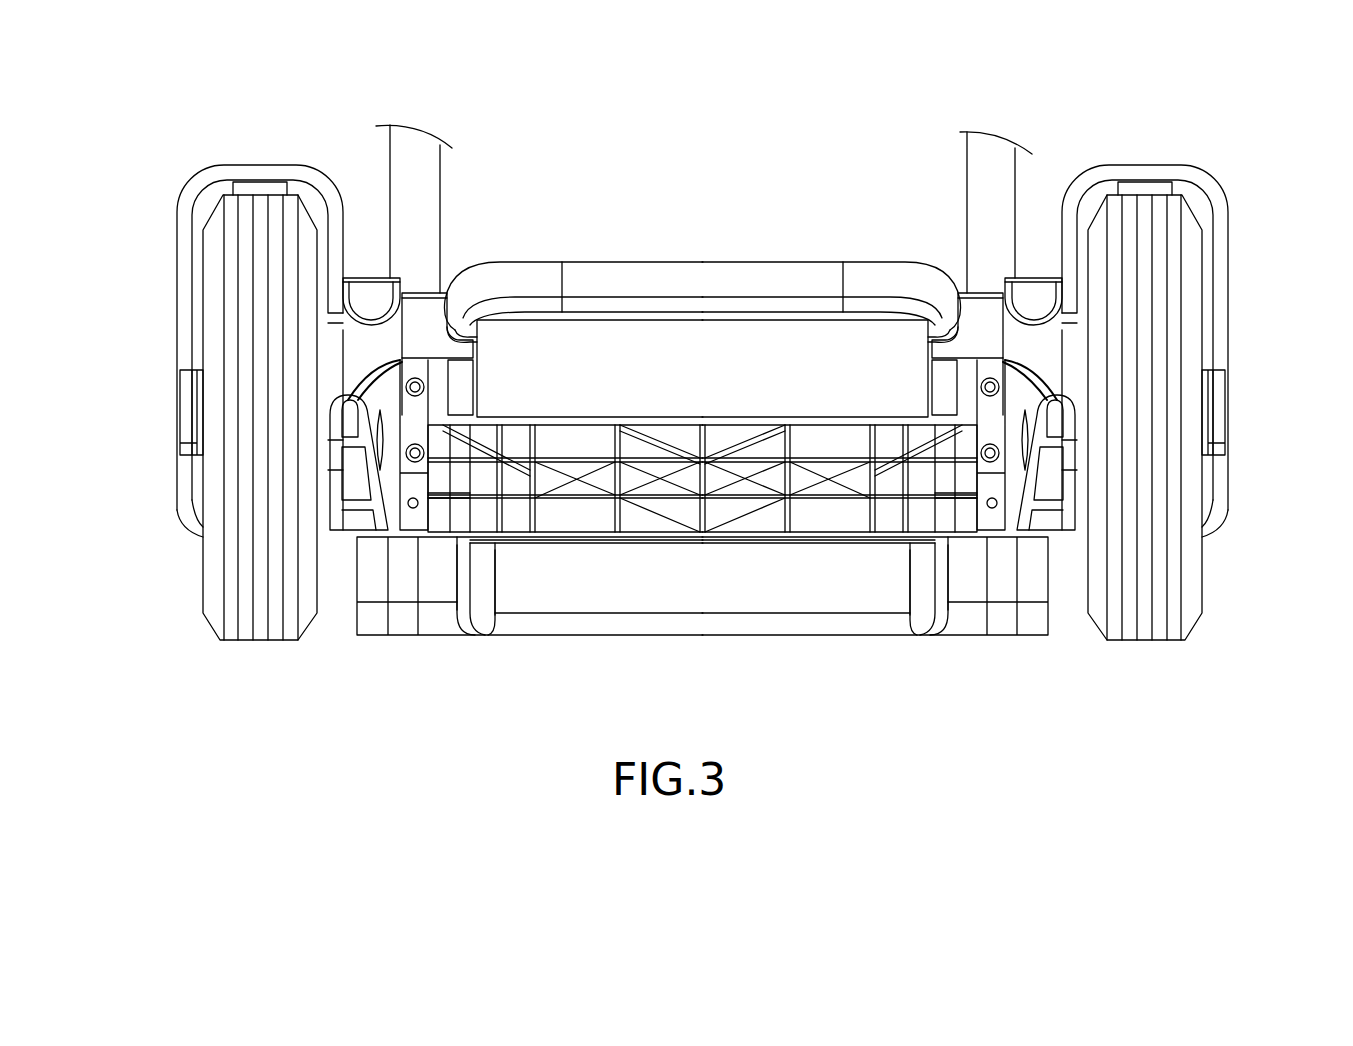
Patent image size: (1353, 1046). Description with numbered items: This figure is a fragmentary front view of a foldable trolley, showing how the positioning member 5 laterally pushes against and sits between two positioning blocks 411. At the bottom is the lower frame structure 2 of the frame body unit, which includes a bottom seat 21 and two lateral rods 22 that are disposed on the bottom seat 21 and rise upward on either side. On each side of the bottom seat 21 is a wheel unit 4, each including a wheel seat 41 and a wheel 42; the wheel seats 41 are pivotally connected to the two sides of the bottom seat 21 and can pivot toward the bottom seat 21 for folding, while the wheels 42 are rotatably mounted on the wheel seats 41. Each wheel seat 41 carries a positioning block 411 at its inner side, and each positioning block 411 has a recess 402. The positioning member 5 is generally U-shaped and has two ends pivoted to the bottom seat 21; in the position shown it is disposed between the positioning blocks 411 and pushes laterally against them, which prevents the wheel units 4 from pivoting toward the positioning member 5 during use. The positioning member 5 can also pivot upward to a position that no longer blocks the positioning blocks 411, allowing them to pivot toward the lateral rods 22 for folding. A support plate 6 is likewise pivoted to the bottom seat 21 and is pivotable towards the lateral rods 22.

The lower frame structure 2 is at (535, 645).
The bottom seat 21 is at (835, 525).
The lateral rods 22 is at (420, 176).
The wheel unit 4 is at (702, 457).
The wheel seat 41 is at (185, 352).
The wheel 42 is at (240, 625).
The positioning block 411 is at (420, 310).
The recess 402 is at (478, 320).
The positioning member 5 is at (680, 280).
The support plate 6 is at (975, 625).